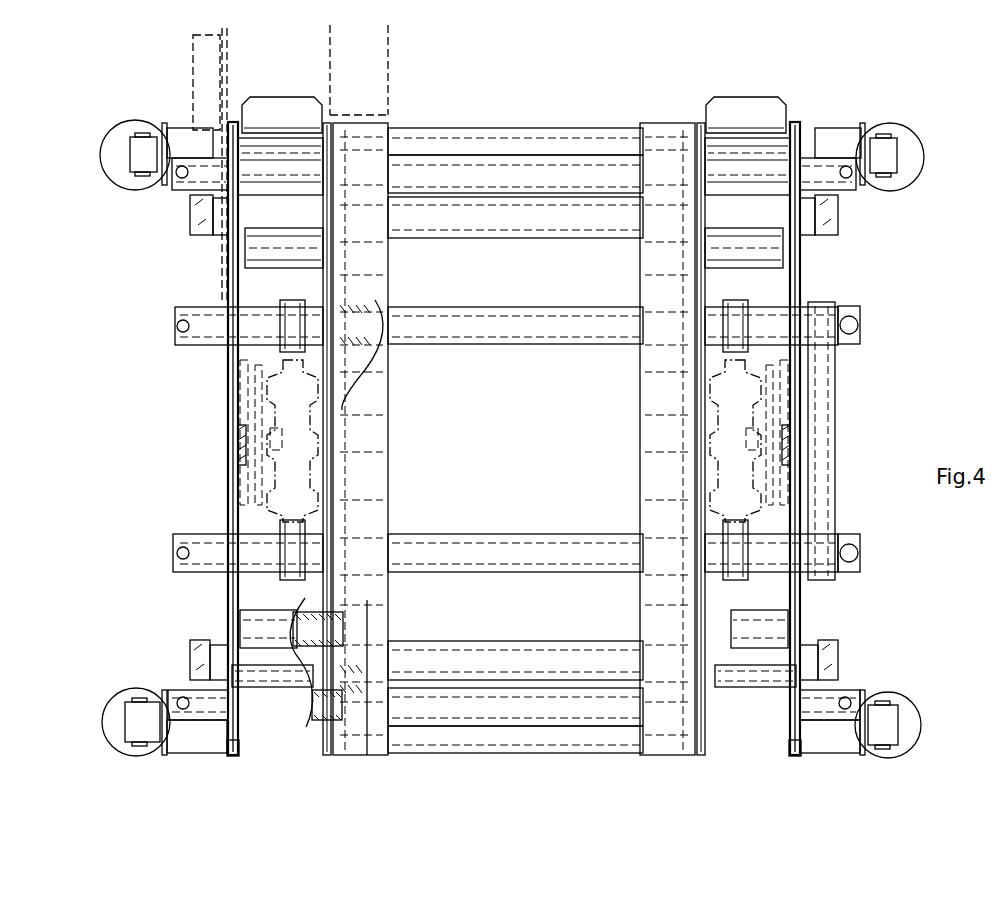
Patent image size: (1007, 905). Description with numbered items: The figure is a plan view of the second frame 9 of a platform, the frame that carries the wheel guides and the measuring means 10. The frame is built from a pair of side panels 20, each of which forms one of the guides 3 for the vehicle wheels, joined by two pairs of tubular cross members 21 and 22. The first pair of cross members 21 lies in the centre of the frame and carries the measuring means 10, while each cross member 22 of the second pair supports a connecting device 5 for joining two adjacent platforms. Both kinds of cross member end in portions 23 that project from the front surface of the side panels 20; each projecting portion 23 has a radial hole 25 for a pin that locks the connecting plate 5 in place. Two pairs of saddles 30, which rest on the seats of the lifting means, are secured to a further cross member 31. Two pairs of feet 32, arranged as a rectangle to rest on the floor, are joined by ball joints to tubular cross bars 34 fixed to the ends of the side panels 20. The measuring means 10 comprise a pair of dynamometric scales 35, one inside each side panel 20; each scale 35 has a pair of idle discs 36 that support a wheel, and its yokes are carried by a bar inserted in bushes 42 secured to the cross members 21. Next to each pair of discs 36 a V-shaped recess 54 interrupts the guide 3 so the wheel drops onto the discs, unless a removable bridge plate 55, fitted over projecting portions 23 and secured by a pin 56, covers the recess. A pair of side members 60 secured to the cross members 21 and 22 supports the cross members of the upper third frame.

The guide 3 is at (226, 270).
The connecting device 5 is at (190, 65).
The second frame 9 is at (924, 238).
The measuring means 10 is at (290, 412).
The side panel 20 is at (228, 755).
The cross member 21 is at (500, 323).
The cross member 22 is at (545, 180).
The projecting portion 23 is at (192, 190).
The radial hole 25 is at (180, 168).
The saddle 30 is at (200, 215).
The cross member 31 is at (195, 232).
The foot 32 is at (128, 152).
The cross bar 34 is at (480, 147).
The dynamometric scale 35 is at (262, 435).
The disc 36 is at (240, 370).
The bush 42 is at (292, 302).
The V-shaped recess 54 is at (230, 445).
The bridge plate 55 is at (822, 462).
The pin 56 is at (858, 326).
The side member 60 is at (368, 478).